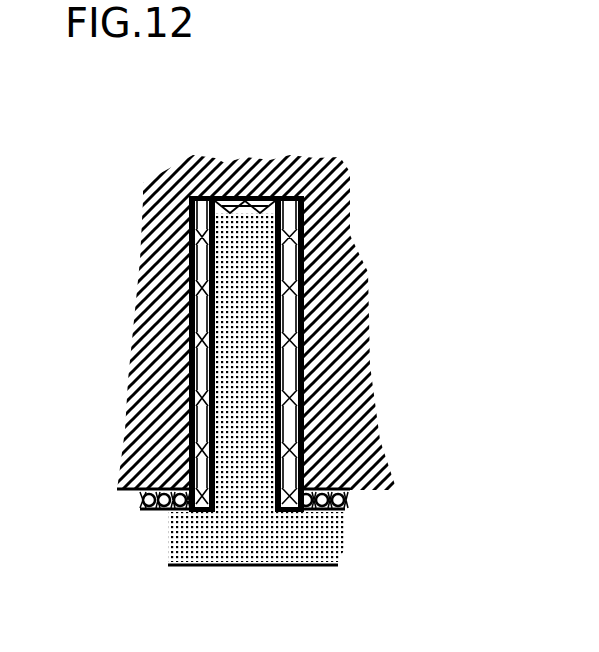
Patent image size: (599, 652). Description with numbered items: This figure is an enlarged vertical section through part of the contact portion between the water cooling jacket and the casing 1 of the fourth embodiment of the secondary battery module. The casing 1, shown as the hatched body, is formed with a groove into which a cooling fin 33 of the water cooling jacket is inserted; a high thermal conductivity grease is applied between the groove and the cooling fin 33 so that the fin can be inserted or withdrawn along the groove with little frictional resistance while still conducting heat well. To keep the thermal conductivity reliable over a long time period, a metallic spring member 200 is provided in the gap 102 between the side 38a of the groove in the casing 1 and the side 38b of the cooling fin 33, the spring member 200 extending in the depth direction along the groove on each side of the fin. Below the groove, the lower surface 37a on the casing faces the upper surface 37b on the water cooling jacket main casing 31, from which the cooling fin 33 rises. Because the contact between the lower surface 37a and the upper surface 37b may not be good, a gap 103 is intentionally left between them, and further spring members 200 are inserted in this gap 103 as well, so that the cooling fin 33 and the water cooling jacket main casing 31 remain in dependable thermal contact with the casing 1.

The casing 1 is at (145, 183).
The cooling fin 33 is at (255, 272).
The side of the cooling fin 38b is at (245, 338).
The side of the groove 38a is at (303, 343).
The gap 102 is at (290, 383).
The metallic spring member 200 is at (244, 354).
The lower surface on the casing 37a is at (150, 487).
The upper surface on the water cooling jacket main casing 37b is at (162, 509).
The water cooling jacket main casing 31 is at (190, 545).
The gap 103 is at (335, 512).